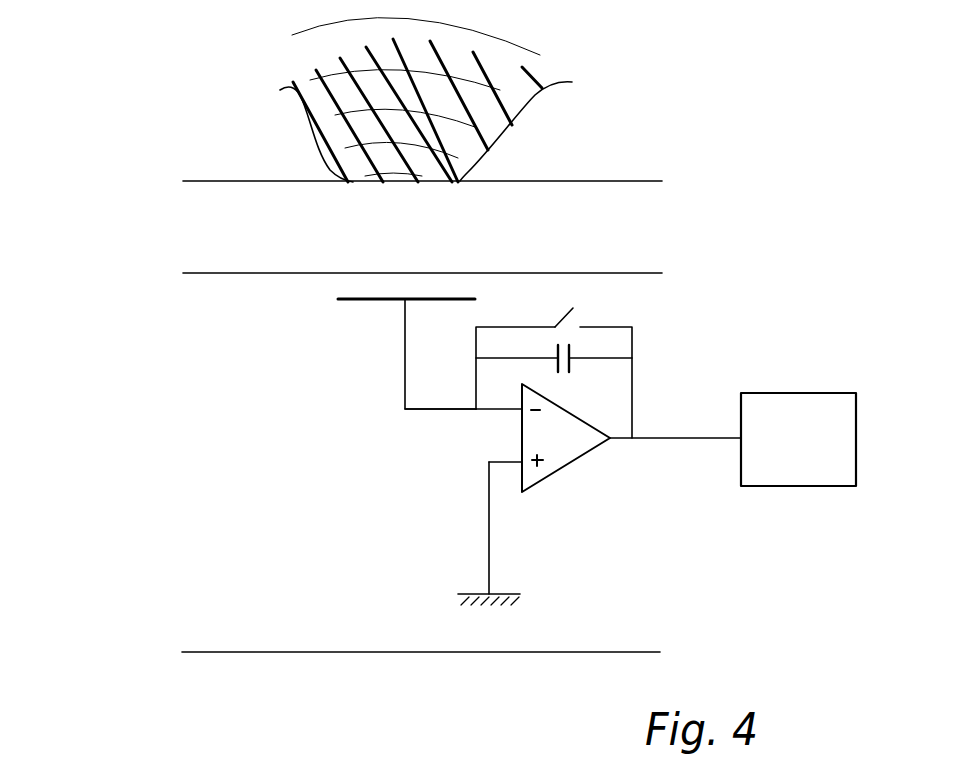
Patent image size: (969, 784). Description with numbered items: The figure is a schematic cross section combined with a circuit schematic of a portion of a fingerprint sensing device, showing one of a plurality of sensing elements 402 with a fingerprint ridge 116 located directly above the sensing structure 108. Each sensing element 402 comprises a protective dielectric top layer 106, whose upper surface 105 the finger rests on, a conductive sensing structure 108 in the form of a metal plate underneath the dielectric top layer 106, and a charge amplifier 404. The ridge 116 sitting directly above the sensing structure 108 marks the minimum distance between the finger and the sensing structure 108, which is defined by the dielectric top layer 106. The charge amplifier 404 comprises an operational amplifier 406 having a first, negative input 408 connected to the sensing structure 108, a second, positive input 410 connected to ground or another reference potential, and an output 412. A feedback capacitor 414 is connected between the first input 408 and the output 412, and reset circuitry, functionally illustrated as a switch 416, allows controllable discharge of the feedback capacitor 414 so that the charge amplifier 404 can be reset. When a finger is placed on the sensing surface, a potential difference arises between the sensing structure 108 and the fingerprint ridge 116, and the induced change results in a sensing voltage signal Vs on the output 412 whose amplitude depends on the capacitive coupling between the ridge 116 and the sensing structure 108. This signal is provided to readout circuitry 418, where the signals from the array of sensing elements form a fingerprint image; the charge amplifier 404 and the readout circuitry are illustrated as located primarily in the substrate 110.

The cover layer / top surface 105 is at (213, 180).
The protective dielectric top layer 106 is at (202, 210).
The fingerprint ridge 116 is at (460, 182).
The sensing element 402 is at (682, 287).
The sensing structure 108 is at (367, 300).
The switch 416 is at (560, 320).
The feedback capacitor 414 is at (577, 355).
The operational amplifier 406 is at (558, 470).
The first input 408 is at (518, 413).
The second input 410 is at (480, 463).
The charge amplifier 404 is at (417, 528).
The output 412 is at (607, 440).
The readout circuitry 418 is at (812, 393).
The substrate 110 is at (172, 500).